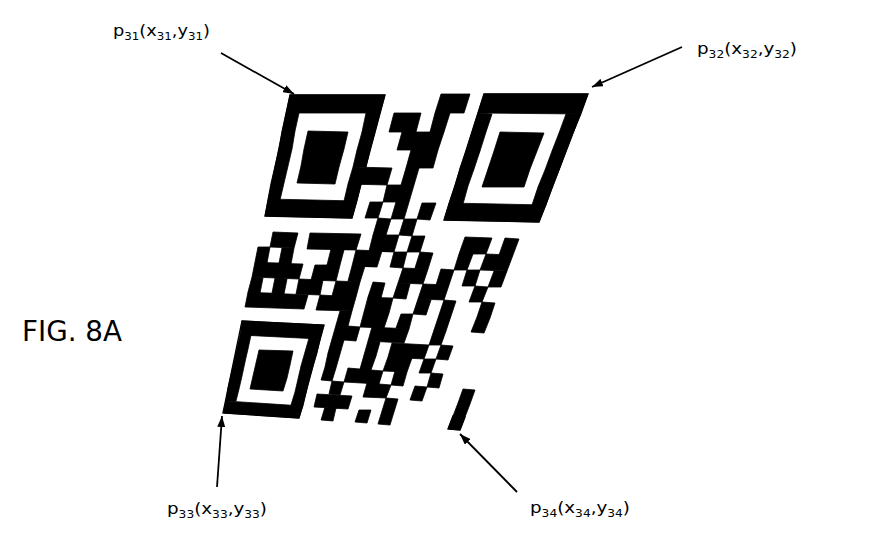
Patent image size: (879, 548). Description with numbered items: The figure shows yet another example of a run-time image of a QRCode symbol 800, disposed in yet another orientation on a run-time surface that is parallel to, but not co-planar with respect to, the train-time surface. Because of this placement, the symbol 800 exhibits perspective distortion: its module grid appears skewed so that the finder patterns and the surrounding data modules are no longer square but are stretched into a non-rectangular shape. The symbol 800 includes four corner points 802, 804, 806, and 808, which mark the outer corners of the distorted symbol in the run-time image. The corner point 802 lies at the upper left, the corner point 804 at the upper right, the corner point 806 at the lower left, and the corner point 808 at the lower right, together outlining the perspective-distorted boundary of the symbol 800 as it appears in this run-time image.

The QRCode symbol 800 is at (605, 283).
The corner point 802 is at (297, 94).
The corner point 804 is at (593, 90).
The corner point 806 is at (225, 415).
The corner point 808 is at (462, 423).